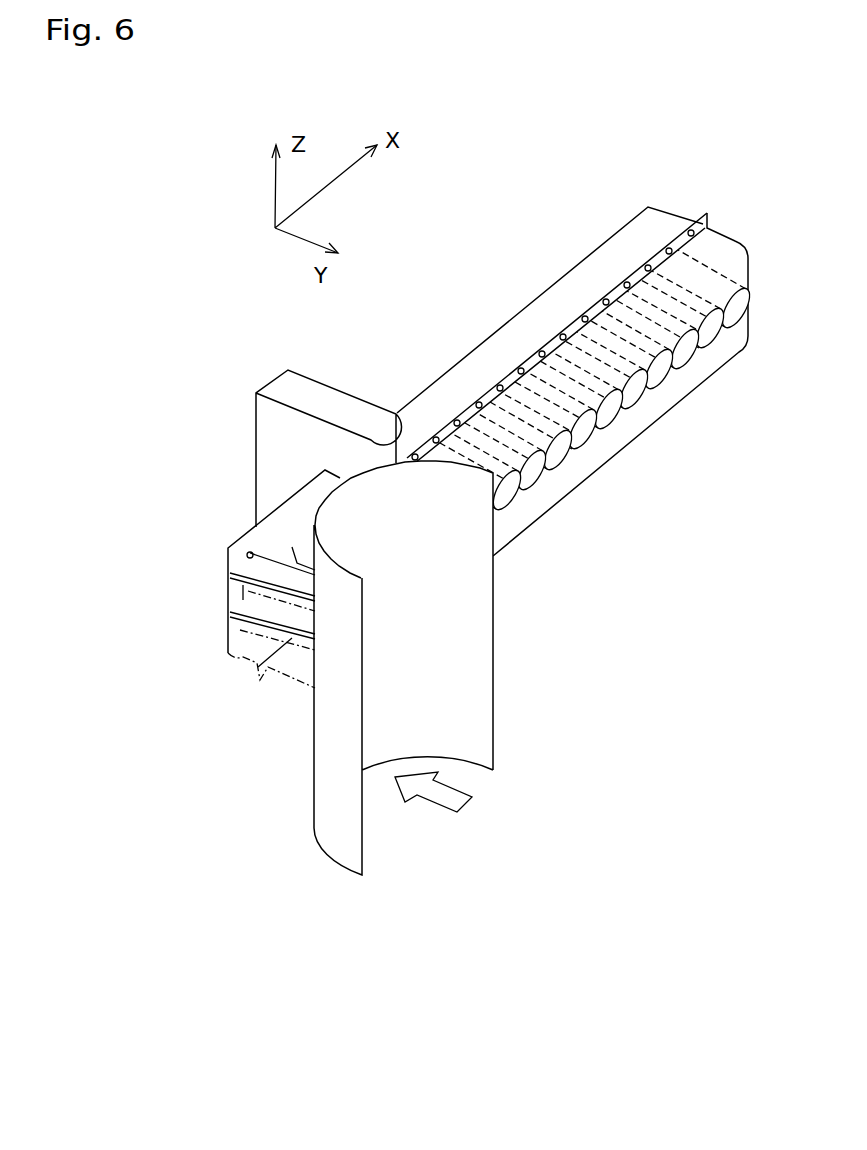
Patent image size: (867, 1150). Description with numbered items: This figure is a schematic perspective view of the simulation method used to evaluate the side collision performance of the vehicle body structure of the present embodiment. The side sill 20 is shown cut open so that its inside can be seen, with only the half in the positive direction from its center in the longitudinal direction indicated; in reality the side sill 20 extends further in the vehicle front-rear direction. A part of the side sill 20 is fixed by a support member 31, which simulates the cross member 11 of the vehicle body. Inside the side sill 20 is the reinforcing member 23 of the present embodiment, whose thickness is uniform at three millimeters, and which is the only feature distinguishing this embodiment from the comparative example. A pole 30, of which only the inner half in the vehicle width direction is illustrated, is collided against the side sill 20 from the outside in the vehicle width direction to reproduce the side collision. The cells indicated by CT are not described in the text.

The side sill 20 is at (658, 221).
The battery cells CT is at (626, 433).
The support member 31 is at (270, 423).
The cross member 11 is at (236, 448).
The reinforcing member 23 is at (247, 597).
The pole 30 is at (333, 842).